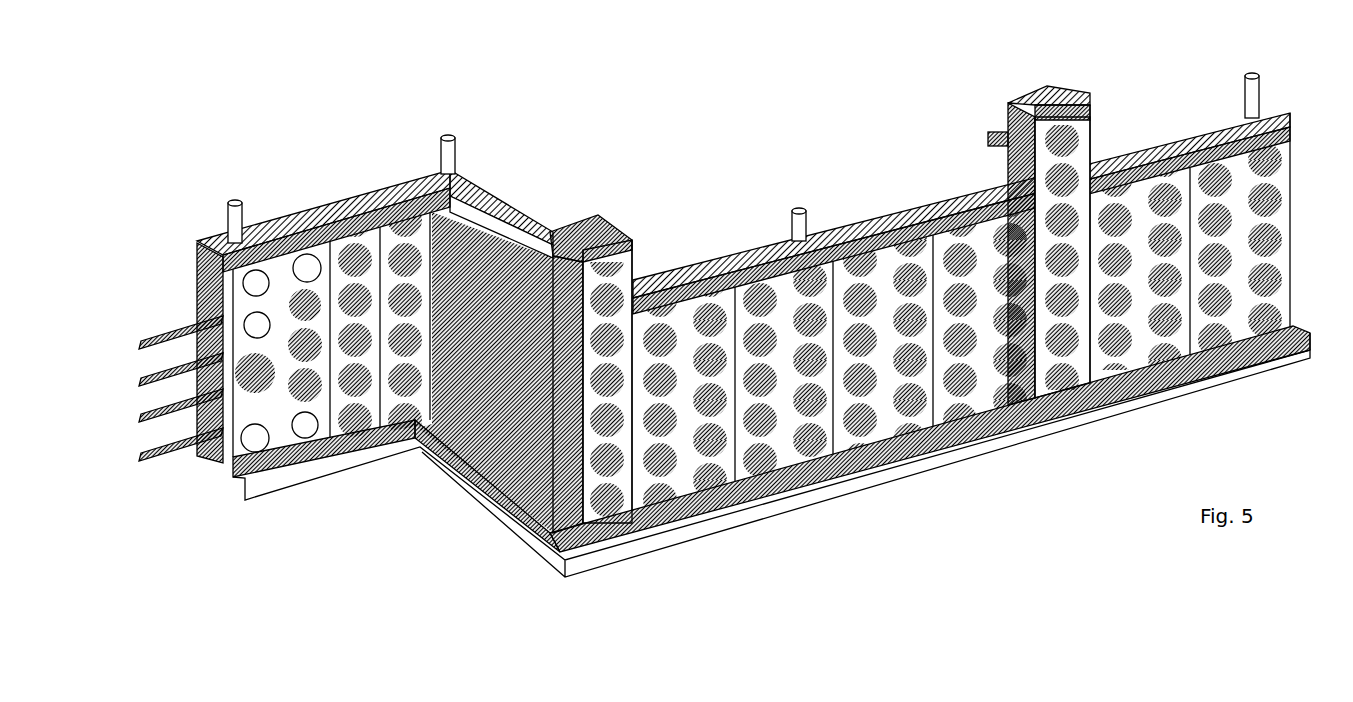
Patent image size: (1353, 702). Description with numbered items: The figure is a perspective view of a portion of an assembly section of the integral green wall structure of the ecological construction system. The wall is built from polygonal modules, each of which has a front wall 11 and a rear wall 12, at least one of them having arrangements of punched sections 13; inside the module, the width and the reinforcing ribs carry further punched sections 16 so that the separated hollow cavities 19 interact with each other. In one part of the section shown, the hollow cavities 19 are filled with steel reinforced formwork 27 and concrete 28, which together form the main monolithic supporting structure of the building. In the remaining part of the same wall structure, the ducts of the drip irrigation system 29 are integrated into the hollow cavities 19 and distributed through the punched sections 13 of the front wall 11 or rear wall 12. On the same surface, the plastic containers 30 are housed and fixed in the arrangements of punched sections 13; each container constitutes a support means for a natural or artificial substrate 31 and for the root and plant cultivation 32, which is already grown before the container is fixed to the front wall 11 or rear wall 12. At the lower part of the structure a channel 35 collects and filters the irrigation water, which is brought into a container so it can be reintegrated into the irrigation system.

The front wall 11 is at (335, 192).
The rear wall 12 is at (1292, 234).
The punched sections 13 is at (330, 455).
The punched sections 16 is at (195, 247).
The hollow cavities 19 is at (520, 235).
The steel reinforced formwork 27 is at (230, 212).
The concrete 28 is at (425, 178).
The ducts of the drip irrigation system 29 is at (140, 345).
The plastic containers 30 is at (233, 470).
The substrate 31 is at (292, 222).
The root and plant cultivation 32 is at (680, 524).
The channel 35 is at (488, 497).